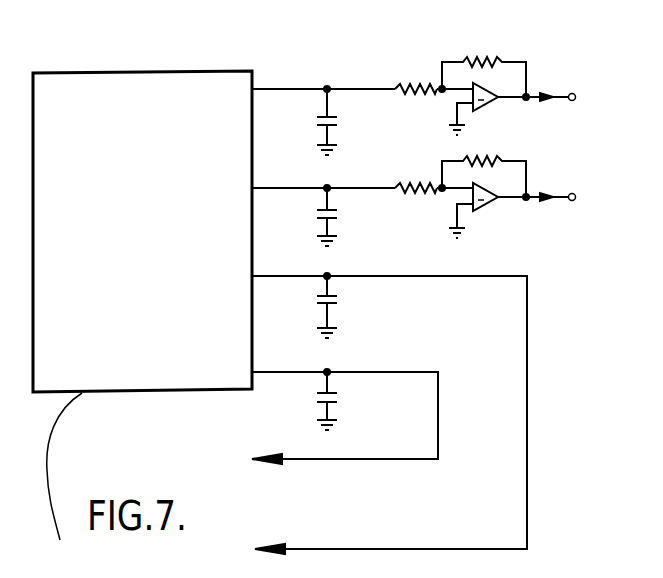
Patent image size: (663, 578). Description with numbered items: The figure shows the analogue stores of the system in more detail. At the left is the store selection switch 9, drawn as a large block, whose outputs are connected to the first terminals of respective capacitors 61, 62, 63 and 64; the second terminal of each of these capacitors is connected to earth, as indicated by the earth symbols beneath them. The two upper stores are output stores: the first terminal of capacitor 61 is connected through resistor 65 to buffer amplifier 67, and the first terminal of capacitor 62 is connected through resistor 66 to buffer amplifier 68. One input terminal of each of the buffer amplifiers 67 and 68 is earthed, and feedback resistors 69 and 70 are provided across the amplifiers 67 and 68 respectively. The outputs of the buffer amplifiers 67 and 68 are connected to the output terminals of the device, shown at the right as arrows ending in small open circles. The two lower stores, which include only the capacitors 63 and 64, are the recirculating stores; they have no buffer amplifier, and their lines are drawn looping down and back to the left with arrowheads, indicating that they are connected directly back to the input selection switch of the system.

The store selection switch 9 is at (140, 375).
The capacitor 61 is at (316, 122).
The capacitor 62 is at (316, 215).
The capacitor 63 is at (316, 301).
The capacitor 64 is at (316, 397).
The resistor 65 is at (417, 82).
The resistor 66 is at (417, 182).
The buffer amplifier 67 is at (487, 103).
The buffer amplifier 68 is at (487, 202).
The feedback resistor 69 is at (490, 57).
The feedback resistor 70 is at (488, 158).